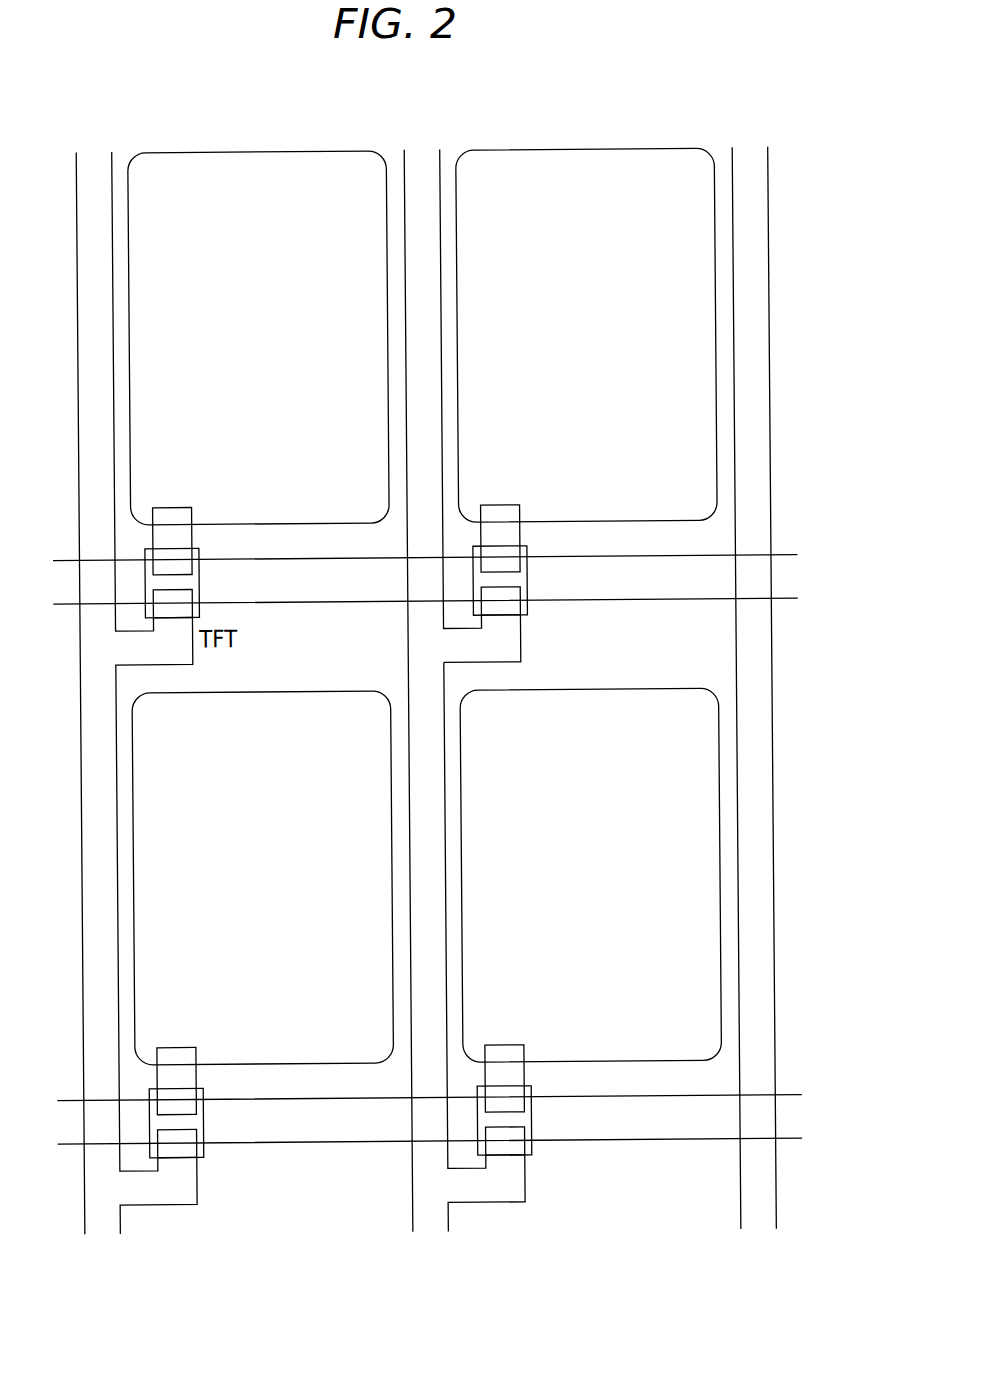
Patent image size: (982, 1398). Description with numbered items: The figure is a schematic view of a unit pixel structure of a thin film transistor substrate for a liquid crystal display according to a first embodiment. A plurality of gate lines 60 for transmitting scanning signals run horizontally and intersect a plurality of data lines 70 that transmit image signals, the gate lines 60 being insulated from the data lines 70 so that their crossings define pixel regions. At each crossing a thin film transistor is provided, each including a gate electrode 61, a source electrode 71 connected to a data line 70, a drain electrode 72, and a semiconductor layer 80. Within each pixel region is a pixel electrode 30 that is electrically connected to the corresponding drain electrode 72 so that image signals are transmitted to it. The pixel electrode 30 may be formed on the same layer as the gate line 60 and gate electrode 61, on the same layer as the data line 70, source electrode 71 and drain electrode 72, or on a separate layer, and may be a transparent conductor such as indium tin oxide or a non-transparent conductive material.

The pixel electrode 30 is at (687, 155).
The gate line 60 is at (783, 561).
The gate electrode 61 is at (523, 584).
The data line 70 is at (766, 455).
The source electrode 71 is at (516, 659).
The drain electrode 72 is at (516, 536).
The semiconductor layer 80 is at (469, 557).